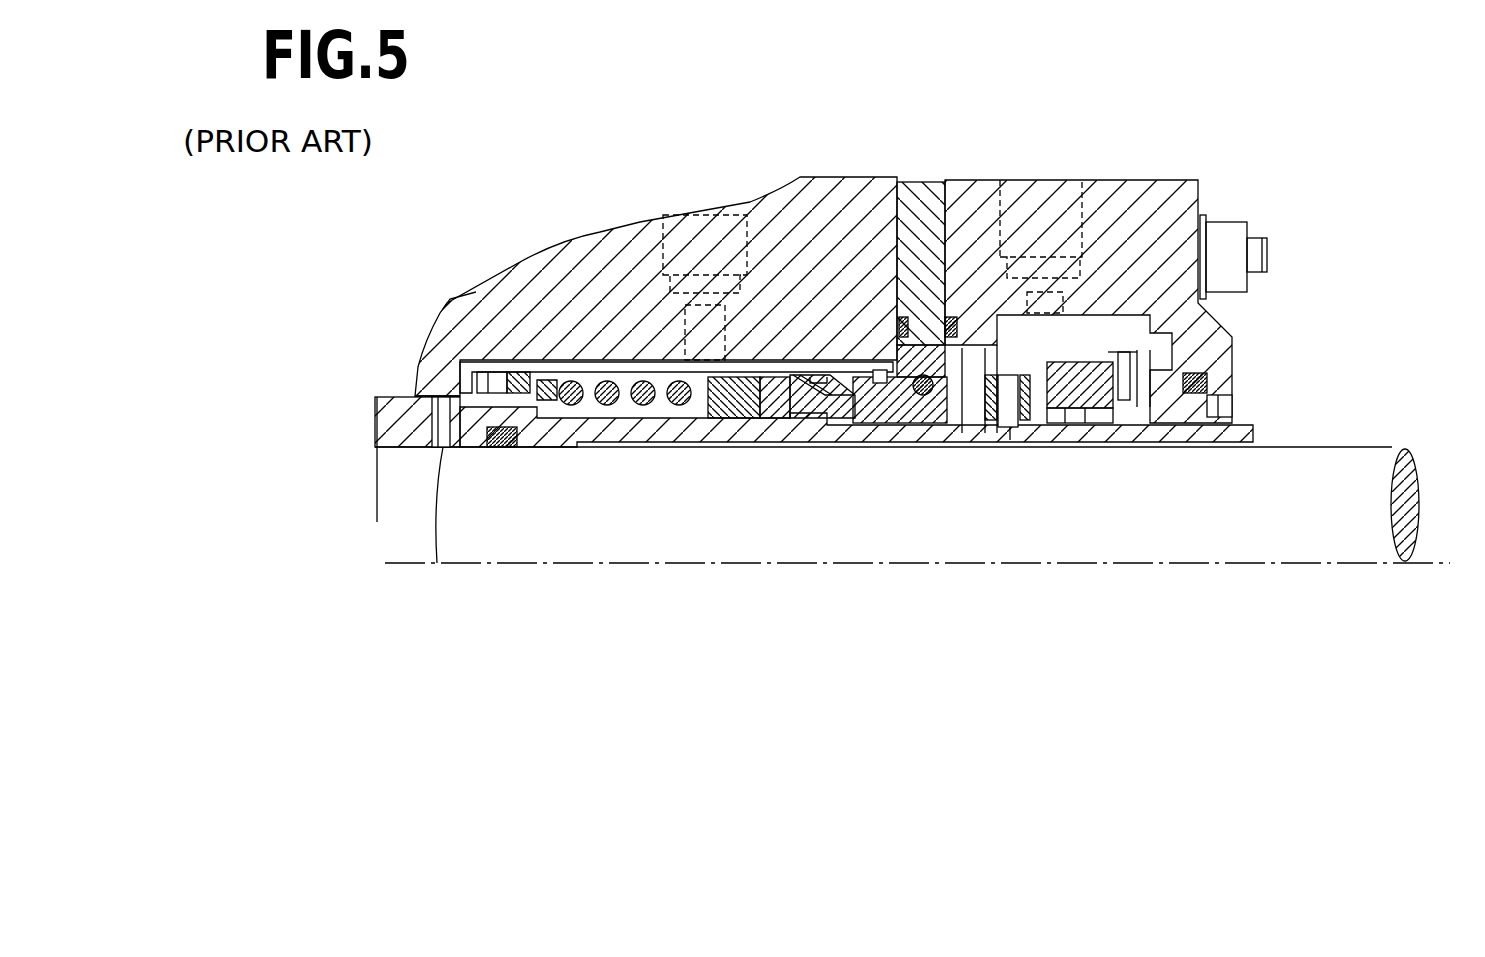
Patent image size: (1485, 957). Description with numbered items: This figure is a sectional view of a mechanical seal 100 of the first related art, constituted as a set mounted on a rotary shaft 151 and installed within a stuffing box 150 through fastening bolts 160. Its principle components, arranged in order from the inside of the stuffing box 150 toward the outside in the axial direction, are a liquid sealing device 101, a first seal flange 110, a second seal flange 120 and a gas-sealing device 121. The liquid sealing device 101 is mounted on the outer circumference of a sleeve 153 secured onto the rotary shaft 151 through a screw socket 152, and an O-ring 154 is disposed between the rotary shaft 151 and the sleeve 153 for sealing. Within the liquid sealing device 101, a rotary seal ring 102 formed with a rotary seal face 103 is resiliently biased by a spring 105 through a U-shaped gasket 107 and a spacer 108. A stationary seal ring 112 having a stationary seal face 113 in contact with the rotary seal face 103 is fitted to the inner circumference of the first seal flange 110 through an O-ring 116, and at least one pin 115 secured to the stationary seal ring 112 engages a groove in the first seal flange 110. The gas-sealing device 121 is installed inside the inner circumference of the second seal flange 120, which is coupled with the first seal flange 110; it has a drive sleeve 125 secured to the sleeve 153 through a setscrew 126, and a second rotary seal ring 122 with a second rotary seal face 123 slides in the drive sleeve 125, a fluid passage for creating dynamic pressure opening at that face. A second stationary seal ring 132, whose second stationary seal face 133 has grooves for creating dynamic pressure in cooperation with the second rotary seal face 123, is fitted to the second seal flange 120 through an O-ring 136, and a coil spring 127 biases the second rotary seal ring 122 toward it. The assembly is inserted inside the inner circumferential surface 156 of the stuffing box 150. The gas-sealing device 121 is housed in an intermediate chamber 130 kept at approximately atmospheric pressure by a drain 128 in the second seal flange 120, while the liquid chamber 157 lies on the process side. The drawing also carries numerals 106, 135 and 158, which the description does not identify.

The mechanical seal 100 is at (1300, 193).
The liquid sealing device 101 is at (630, 362).
The rotary seal ring 102 is at (803, 447).
The rotary seal face 103 is at (875, 447).
The spring 105 is at (637, 447).
The spring coil 106 is at (610, 447).
The U-shaped gasket 107 is at (755, 447).
The spacer 108 is at (707, 447).
The first seal flange 110 is at (945, 330).
The stationary seal ring 112 is at (910, 447).
The stationary seal face 113 is at (830, 378).
The pin 115 is at (943, 447).
The O-ring 116 is at (903, 335).
The second seal flange 120 is at (1153, 225).
The gas-sealing device 121 is at (1083, 348).
The second rotary seal ring 122 is at (1103, 447).
The second rotary seal face 123 is at (1195, 360).
The drive sleeve 125 is at (1037, 447).
The setscrew 126 is at (1010, 447).
The coil spring 127 is at (1040, 388).
The drain 128 is at (1045, 178).
The intermediate chamber 130 is at (1173, 332).
The second stationary seal ring 132 is at (1200, 447).
The second stationary seal face 133 is at (1168, 447).
The retaining ring 135 is at (1232, 412).
The O-ring 136 is at (1208, 382).
The stuffing box 150 is at (823, 200).
The rotary shaft 151 is at (453, 485).
The screw socket 152 is at (428, 393).
The sleeve 153 is at (400, 421).
The O-ring 154 is at (493, 447).
The inner circumferential surface 156 is at (548, 365).
The liquid chamber 157 is at (465, 372).
The bolt 158 is at (697, 225).
The fastening bolts 160 is at (1222, 227).